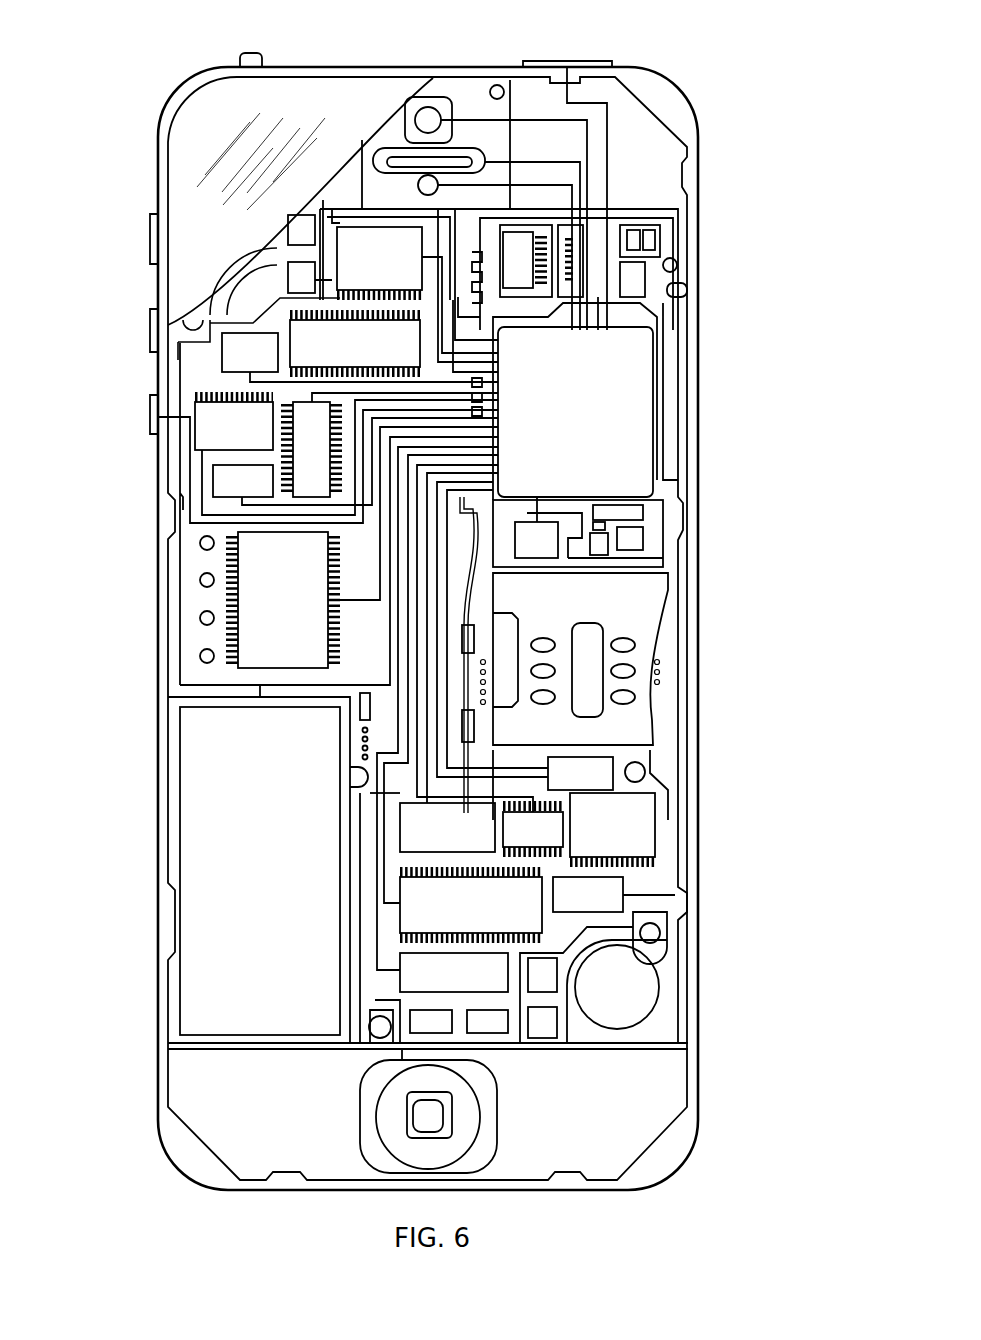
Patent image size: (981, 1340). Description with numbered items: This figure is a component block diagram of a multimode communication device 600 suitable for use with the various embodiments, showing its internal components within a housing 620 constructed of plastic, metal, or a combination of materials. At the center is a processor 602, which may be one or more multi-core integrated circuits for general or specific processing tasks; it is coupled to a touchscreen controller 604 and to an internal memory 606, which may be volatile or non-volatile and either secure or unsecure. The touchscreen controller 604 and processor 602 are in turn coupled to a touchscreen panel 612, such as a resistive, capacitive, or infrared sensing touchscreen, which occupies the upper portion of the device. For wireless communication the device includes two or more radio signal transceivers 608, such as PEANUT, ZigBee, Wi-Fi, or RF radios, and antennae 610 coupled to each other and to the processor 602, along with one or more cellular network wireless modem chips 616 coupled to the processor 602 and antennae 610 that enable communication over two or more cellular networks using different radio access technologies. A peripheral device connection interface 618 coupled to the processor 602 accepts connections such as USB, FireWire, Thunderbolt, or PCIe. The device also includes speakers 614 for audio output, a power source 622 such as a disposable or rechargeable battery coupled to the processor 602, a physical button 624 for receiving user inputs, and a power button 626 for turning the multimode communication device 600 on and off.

The multimode communication device 600 is at (109, 52).
The processor 602 is at (559, 419).
The touchscreen controller 604 is at (363, 267).
The internal memory 606 is at (265, 604).
The radio signal transceivers 608 is at (597, 238).
The antennae 610 is at (638, 275).
The touchscreen panel 612 is at (200, 163).
The speakers 614 is at (380, 147).
The cellular network wireless modem chip 616 is at (453, 914).
The peripheral device connection interface 618 is at (439, 986).
The housing 620 is at (700, 1068).
The power source 622 is at (243, 879).
The physical button 624 is at (437, 1125).
The power button 626 is at (568, 62).